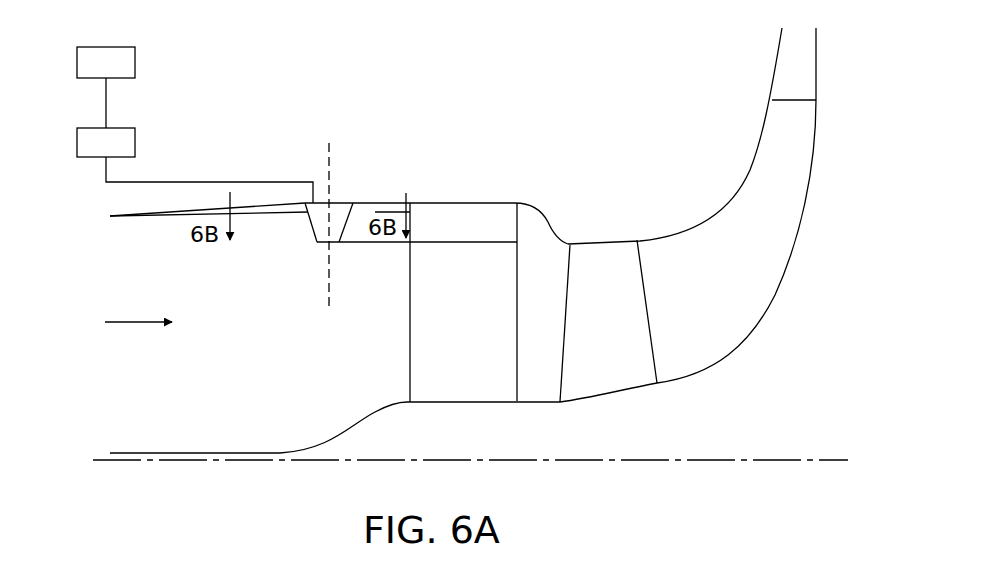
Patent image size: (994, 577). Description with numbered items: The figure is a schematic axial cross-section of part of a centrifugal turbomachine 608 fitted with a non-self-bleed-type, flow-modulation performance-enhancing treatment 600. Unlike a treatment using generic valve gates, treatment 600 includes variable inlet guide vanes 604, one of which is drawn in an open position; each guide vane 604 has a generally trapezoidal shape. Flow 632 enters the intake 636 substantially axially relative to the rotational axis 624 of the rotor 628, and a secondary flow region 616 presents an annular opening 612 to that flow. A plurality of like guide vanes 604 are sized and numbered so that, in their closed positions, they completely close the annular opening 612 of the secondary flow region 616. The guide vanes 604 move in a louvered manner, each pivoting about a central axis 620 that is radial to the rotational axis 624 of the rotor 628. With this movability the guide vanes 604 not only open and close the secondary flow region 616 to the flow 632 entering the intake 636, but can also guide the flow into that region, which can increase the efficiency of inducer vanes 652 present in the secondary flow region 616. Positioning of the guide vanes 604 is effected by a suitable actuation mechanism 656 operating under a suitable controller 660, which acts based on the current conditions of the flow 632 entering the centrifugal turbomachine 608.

The performance-enhancing treatment 600 is at (372, 165).
The variable inlet guide vane 604 is at (310, 228).
The centrifugal turbomachine 608 is at (563, 108).
The annular opening 612 is at (352, 220).
The secondary flow region 616 is at (452, 215).
The central axis 620 is at (328, 165).
The rotational axis 624 is at (818, 460).
The rotor 628 is at (343, 430).
The flow 632 is at (133, 322).
The intake 636 is at (275, 345).
The inducer vanes 652 is at (505, 222).
The actuation mechanism 656 is at (85, 158).
The controller 660 is at (136, 62).